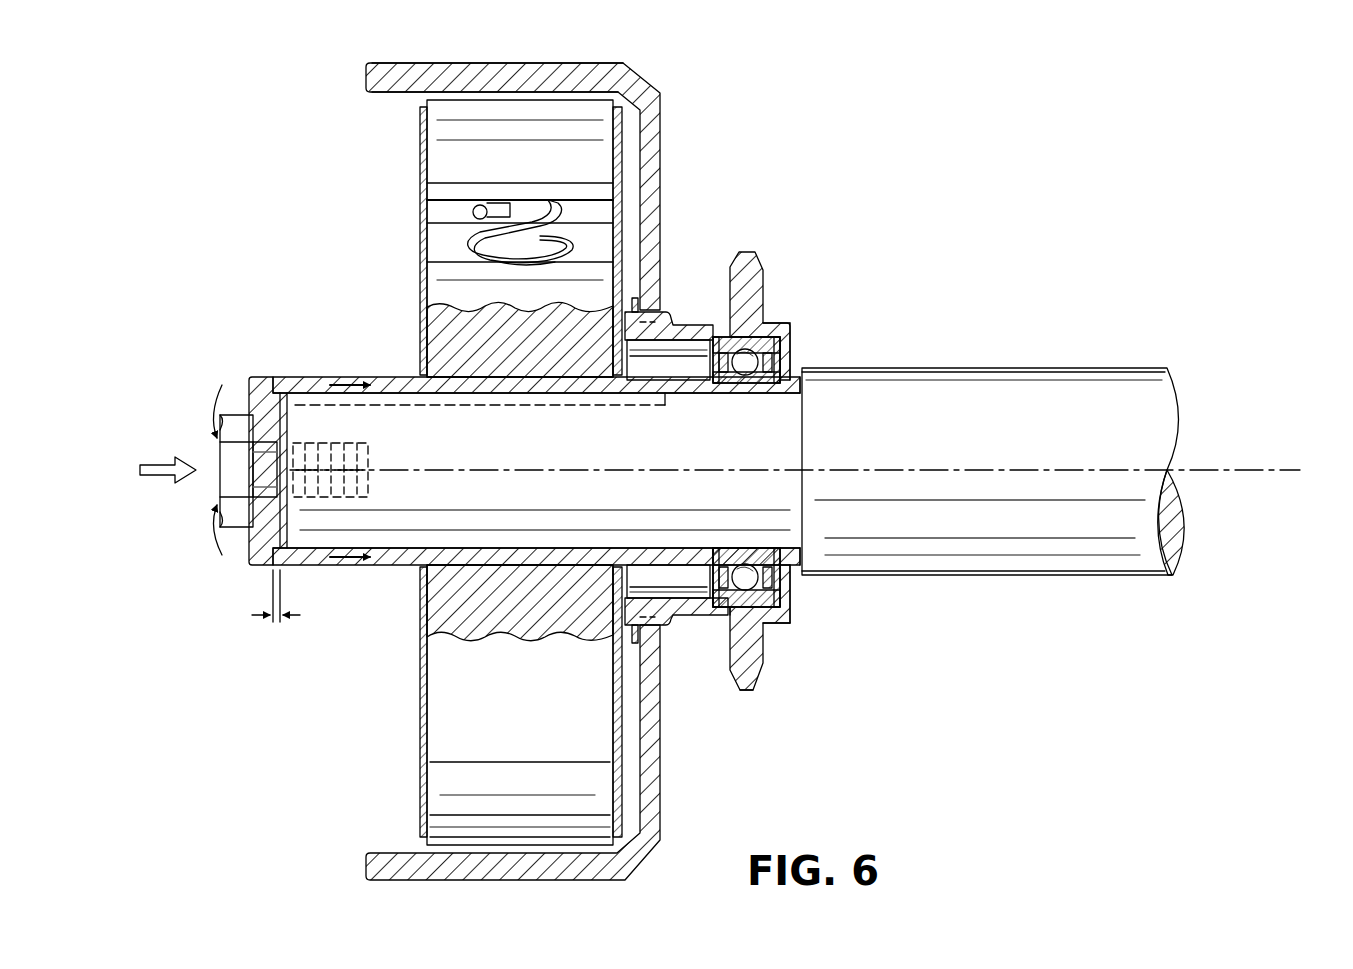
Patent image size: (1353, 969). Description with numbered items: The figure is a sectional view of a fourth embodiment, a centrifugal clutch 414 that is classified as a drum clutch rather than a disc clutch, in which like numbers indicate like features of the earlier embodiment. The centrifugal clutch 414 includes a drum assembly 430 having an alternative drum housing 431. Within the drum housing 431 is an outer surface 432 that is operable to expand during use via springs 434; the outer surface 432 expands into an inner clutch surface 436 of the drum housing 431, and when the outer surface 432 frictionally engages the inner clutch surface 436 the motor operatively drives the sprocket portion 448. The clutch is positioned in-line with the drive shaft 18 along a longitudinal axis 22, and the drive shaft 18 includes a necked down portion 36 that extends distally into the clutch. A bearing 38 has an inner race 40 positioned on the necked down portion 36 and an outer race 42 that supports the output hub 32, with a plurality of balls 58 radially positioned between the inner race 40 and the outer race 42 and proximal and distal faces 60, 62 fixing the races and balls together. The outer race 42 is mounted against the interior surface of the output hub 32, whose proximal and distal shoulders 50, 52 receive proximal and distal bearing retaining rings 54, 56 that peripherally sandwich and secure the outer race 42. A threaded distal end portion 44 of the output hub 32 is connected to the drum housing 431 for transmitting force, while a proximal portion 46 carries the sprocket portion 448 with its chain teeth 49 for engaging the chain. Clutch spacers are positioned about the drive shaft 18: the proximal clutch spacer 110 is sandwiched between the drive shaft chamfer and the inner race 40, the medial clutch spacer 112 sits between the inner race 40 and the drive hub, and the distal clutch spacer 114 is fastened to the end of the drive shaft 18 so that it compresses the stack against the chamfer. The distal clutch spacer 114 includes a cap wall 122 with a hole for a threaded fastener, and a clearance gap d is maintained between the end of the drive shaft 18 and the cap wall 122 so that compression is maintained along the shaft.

The centrifugal clutch 414 is at (207, 98).
The drum assembly 430 is at (680, 100).
The drum housing 431 is at (372, 76).
The outer surface 432 is at (457, 90).
The inner clutch surface 436 is at (503, 93).
The springs 434 is at (473, 250).
The longitudinal axis 22 is at (488, 470).
The necked down portion 36 is at (395, 525).
The medial clutch spacer 112 is at (678, 387).
The distal clutch spacer 114 is at (257, 378).
The cap wall 122 is at (253, 563).
The clearance gap d is at (264, 598).
The distal end portion 44 is at (676, 324).
The distal face 62 is at (718, 360).
The sprocket portion 448 is at (745, 300).
The output hub 32 is at (790, 296).
The proximal portion 46 is at (770, 324).
The bearing 38 is at (788, 366).
The balls 58 is at (742, 374).
The proximal face 60 is at (770, 363).
The proximal clutch spacer 110 is at (787, 383).
The inner race 40 is at (750, 568).
The proximal bearing retaining ring 54 is at (800, 555).
The distal bearing retaining ring 56 is at (713, 600).
The distal shoulder 52 is at (717, 617).
The proximal shoulder 50 is at (773, 622).
The outer race 42 is at (748, 603).
The chain teeth 49 is at (747, 680).
The drive shaft 18 is at (1173, 362).